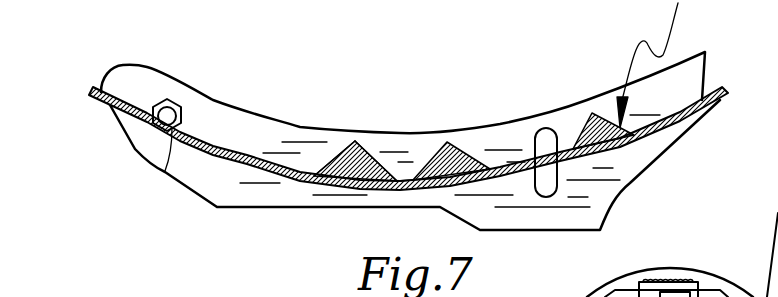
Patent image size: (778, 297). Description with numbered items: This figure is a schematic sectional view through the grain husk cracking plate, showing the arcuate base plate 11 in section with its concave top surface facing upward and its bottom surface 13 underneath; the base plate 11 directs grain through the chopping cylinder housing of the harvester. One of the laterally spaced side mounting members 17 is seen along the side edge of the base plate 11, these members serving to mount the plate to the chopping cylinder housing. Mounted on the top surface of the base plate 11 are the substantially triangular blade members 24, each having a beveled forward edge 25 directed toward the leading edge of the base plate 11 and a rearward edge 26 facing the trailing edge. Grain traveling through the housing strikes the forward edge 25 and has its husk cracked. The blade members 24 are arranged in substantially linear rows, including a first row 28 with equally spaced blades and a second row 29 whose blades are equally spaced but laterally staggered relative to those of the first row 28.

The base plate 11 is at (251, 174).
The bottom surface 13 is at (163, 172).
The side mounting members 17 is at (213, 118).
The blade members 24 is at (385, 181).
The forward edge 25 is at (322, 162).
The rearward edge 26 is at (375, 179).
The first row 28 is at (345, 118).
The second row 29 is at (486, 133).